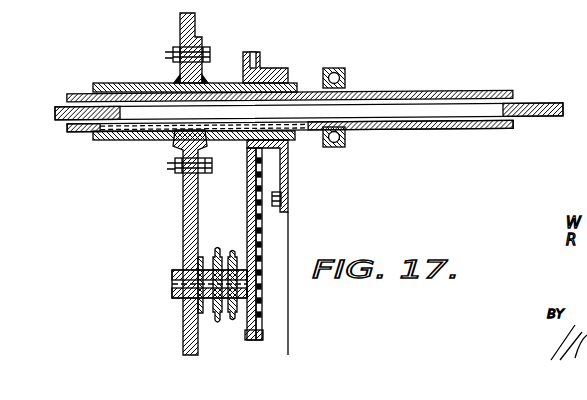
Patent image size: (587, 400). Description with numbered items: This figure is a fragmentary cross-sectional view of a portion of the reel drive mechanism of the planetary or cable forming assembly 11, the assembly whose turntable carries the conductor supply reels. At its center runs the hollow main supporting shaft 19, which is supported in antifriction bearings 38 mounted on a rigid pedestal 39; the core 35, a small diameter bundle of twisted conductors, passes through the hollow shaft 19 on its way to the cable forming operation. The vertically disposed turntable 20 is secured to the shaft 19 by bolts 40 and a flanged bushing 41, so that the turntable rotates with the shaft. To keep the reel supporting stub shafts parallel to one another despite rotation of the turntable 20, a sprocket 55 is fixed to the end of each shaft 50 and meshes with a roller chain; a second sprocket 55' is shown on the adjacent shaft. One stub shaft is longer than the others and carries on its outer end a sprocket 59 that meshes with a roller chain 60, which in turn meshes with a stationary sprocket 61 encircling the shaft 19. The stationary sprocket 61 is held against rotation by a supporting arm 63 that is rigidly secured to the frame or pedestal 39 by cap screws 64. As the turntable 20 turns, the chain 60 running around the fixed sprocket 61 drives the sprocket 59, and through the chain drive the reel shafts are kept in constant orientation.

The planetary or cable forming assembly 11 is at (125, 208).
The main supporting shaft 19 is at (77, 92).
The turntable 20 is at (188, 15).
The core 35 is at (538, 104).
The antifriction bearings 38 is at (334, 68).
The pedestal 39 is at (291, 340).
The bolts 40 is at (173, 57).
The flanged bushing 41 is at (220, 83).
The shaft 50 is at (172, 285).
The sprocket 55 is at (182, 299).
The finger pin 55' is at (233, 311).
The sprocket 59 is at (262, 301).
The roller chain 60 is at (258, 228).
The stationary sprocket 61 is at (270, 68).
The supporting arm 63 is at (289, 178).
The cap screws 64 is at (282, 200).